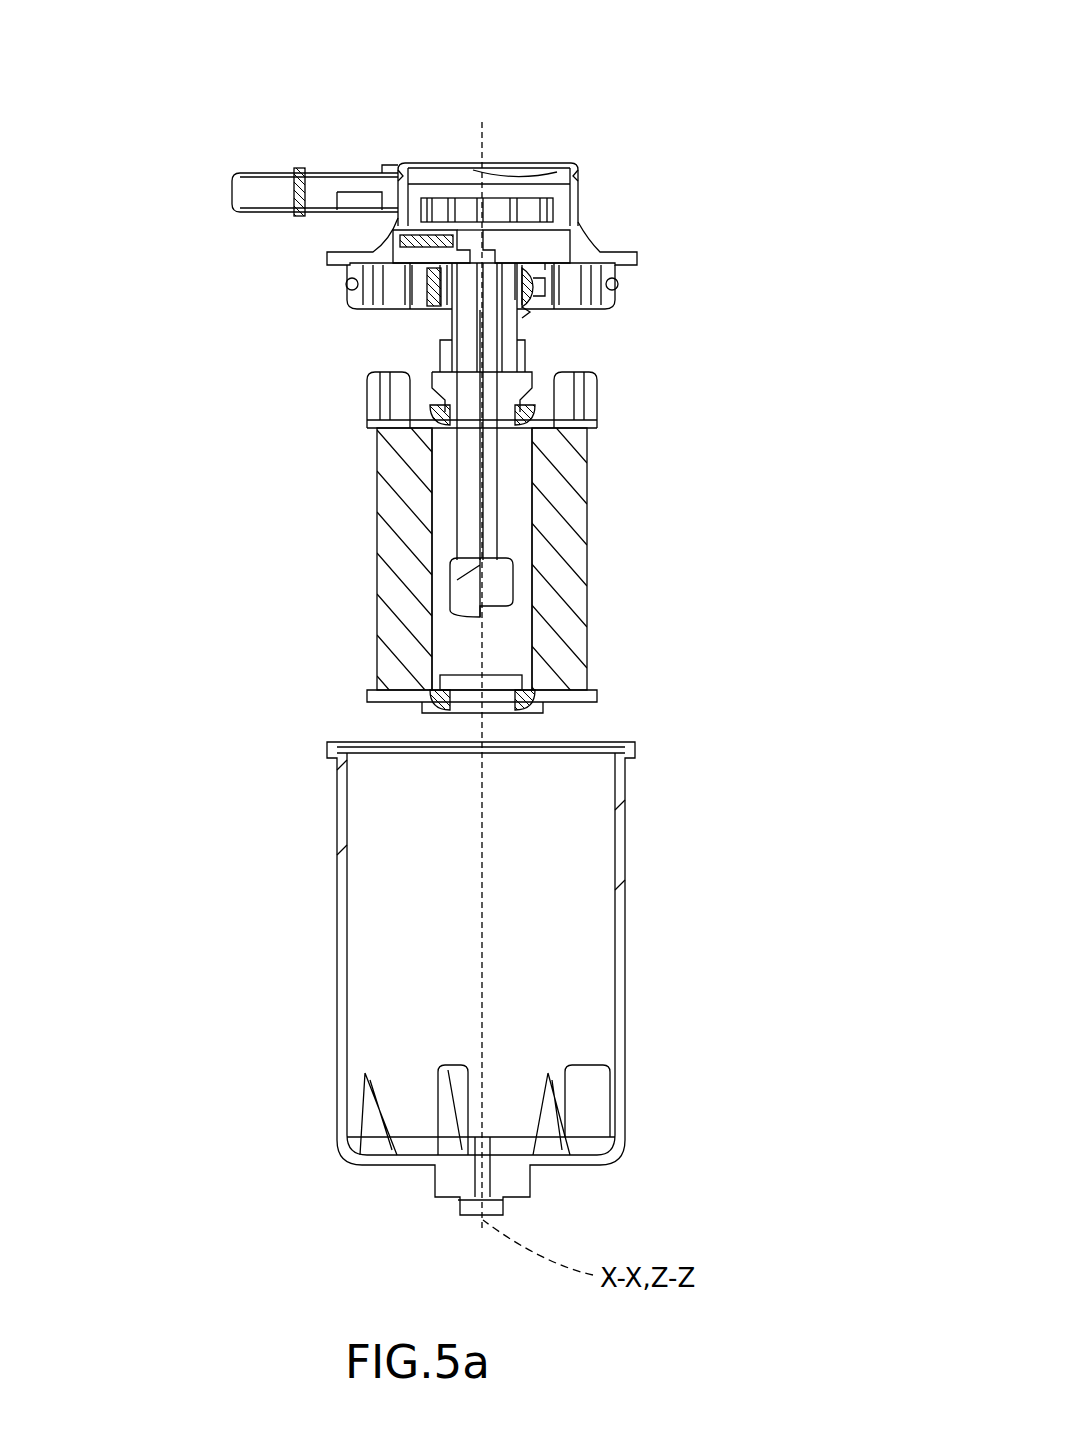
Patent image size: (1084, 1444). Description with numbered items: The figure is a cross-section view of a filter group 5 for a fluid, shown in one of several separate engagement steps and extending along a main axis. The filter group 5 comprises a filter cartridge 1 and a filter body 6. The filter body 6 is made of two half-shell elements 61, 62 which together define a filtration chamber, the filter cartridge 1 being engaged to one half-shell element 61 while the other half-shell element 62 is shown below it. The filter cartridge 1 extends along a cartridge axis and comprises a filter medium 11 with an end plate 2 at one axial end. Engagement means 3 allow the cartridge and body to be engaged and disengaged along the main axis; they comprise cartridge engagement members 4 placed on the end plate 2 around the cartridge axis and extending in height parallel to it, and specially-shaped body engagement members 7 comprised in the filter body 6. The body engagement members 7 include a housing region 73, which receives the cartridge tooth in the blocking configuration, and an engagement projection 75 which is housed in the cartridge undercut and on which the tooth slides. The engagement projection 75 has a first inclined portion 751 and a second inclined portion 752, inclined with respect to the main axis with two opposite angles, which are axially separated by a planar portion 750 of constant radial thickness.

The filter cartridge 1 is at (226, 545).
The end plate 2 is at (380, 430).
The engagement means 3 is at (646, 322).
The cartridge engagement members 4 is at (335, 402).
The filter group 5 is at (262, 84).
The filter body 6 is at (516, 140).
The half-shell element 61 is at (664, 238).
The half-shell element 62 is at (288, 951).
The body engagement members 7 is at (392, 324).
The housing region 73 is at (518, 283).
The engagement projection 75 is at (548, 300).
The planar portion 750 is at (546, 292).
The first inclined portion 751 is at (534, 322).
The second inclined portion 752 is at (532, 258).
The filter medium 11 is at (568, 598).